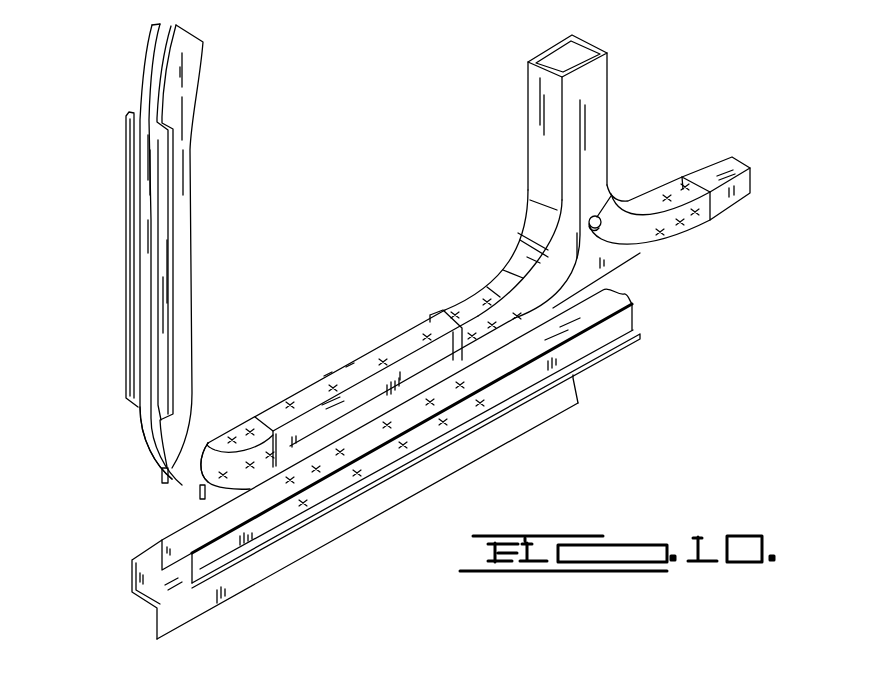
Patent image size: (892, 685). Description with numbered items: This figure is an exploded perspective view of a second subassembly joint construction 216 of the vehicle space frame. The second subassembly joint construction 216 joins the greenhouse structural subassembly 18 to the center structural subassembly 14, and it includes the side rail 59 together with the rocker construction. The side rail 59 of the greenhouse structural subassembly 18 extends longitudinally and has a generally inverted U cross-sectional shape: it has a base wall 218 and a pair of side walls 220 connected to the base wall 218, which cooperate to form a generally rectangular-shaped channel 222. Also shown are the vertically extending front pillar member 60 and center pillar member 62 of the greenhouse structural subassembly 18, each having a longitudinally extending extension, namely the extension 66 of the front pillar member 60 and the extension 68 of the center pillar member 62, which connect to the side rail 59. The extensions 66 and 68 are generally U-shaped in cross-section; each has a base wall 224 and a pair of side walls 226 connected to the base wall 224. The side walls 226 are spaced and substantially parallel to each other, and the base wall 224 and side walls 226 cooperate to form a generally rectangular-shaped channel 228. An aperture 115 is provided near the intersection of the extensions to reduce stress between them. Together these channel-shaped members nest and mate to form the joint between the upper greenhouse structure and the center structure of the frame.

The center structural subassembly 14 is at (657, 327).
The greenhouse structural subassembly 18 is at (118, 152).
The side rail 59 is at (350, 365).
The front pillar member 60 is at (184, 218).
The center pillar member 62 is at (592, 92).
The extension 66 is at (235, 418).
The extension 68 is at (472, 292).
The aperture 115 is at (600, 220).
The second subassembly joint construction 216 is at (88, 480).
The base wall 218 is at (328, 373).
The side walls 220 is at (200, 485).
The channel 222 is at (188, 478).
The base wall 224 is at (255, 418).
The side walls 226 is at (262, 465).
The channel 228 is at (150, 421).